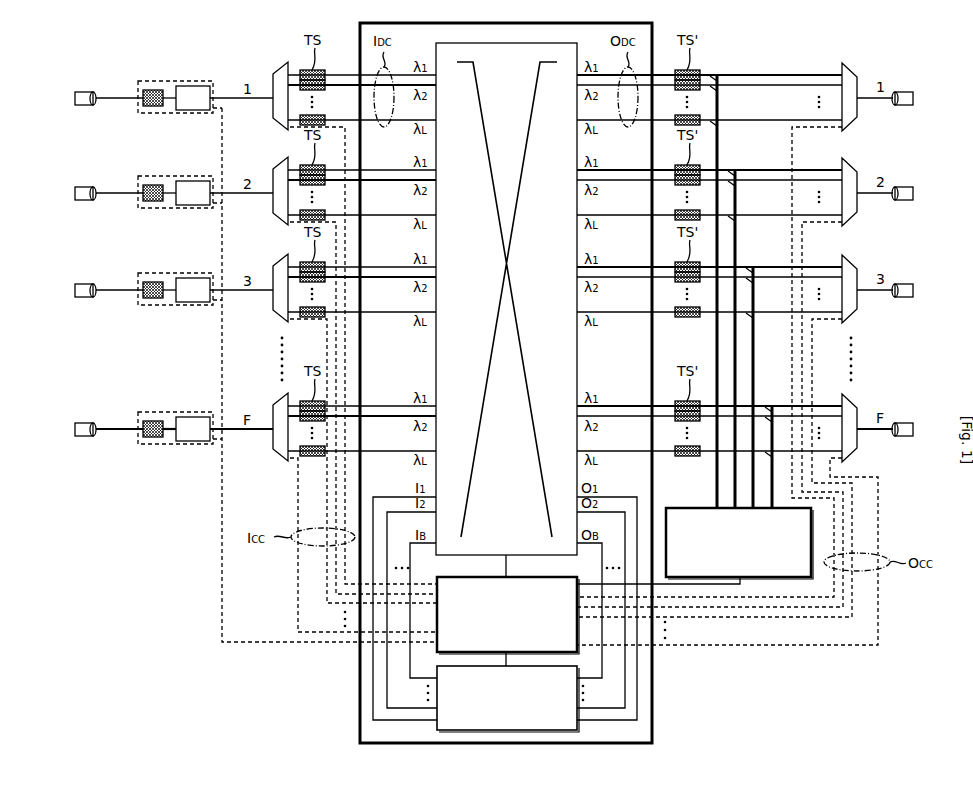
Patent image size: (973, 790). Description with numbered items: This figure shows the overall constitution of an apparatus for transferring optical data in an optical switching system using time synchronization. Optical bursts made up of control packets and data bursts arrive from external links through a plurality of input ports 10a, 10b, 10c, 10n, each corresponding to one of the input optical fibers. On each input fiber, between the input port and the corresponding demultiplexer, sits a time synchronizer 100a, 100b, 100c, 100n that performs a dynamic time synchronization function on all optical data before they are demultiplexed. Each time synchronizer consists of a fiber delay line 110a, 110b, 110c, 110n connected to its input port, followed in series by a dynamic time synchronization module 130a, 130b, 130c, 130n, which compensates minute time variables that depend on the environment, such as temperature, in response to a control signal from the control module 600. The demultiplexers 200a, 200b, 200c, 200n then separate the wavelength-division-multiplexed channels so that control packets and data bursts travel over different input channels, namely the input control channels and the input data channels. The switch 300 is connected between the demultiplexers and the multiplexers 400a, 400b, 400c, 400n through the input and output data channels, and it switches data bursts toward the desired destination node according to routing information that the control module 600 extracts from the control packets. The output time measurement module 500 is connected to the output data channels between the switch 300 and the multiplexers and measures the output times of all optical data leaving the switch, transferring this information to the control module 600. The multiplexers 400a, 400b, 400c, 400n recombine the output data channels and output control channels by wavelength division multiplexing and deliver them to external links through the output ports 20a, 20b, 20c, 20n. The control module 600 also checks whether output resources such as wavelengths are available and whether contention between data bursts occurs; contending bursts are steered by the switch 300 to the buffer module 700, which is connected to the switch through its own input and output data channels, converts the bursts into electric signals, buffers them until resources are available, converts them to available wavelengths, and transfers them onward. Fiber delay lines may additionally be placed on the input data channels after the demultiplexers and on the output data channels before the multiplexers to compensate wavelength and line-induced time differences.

The input port 10a is at (74, 115).
The input port 10b is at (74, 210).
The input port 10c is at (74, 307).
The input port 10n is at (74, 446).
The time synchronizer 100a is at (160, 97).
The time synchronizer 100b is at (160, 192).
The time synchronizer 100c is at (160, 289).
The time synchronizer 100n is at (160, 428).
The fiber delay line for time synchronization 110a is at (135, 117).
The fiber delay line for time synchronization 110b is at (135, 212).
The fiber delay line for time synchronization 110c is at (135, 309).
The fiber delay line for time synchronization 110n is at (135, 448).
The dynamic time synchronization module 130a is at (184, 115).
The dynamic time synchronization module 130b is at (184, 210).
The dynamic time synchronization module 130c is at (184, 307).
The dynamic time synchronization module 130n is at (184, 446).
The demultiplexer 200a is at (258, 85).
The demultiplexer 200b is at (258, 180).
The demultiplexer 200c is at (258, 277).
The demultiplexer 200n is at (258, 416).
The switch 300 is at (578, 360).
The multiplexer 400a is at (871, 85).
The multiplexer 400b is at (872, 180).
The multiplexer 400c is at (871, 277).
The multiplexer 400n is at (872, 416).
The output port 20a is at (915, 113).
The output port 20b is at (916, 208).
The output port 20c is at (915, 305).
The output port 20n is at (916, 444).
The output time measurement module 500 is at (700, 507).
The control module 600 is at (580, 630).
The buffer module 700 is at (578, 727).